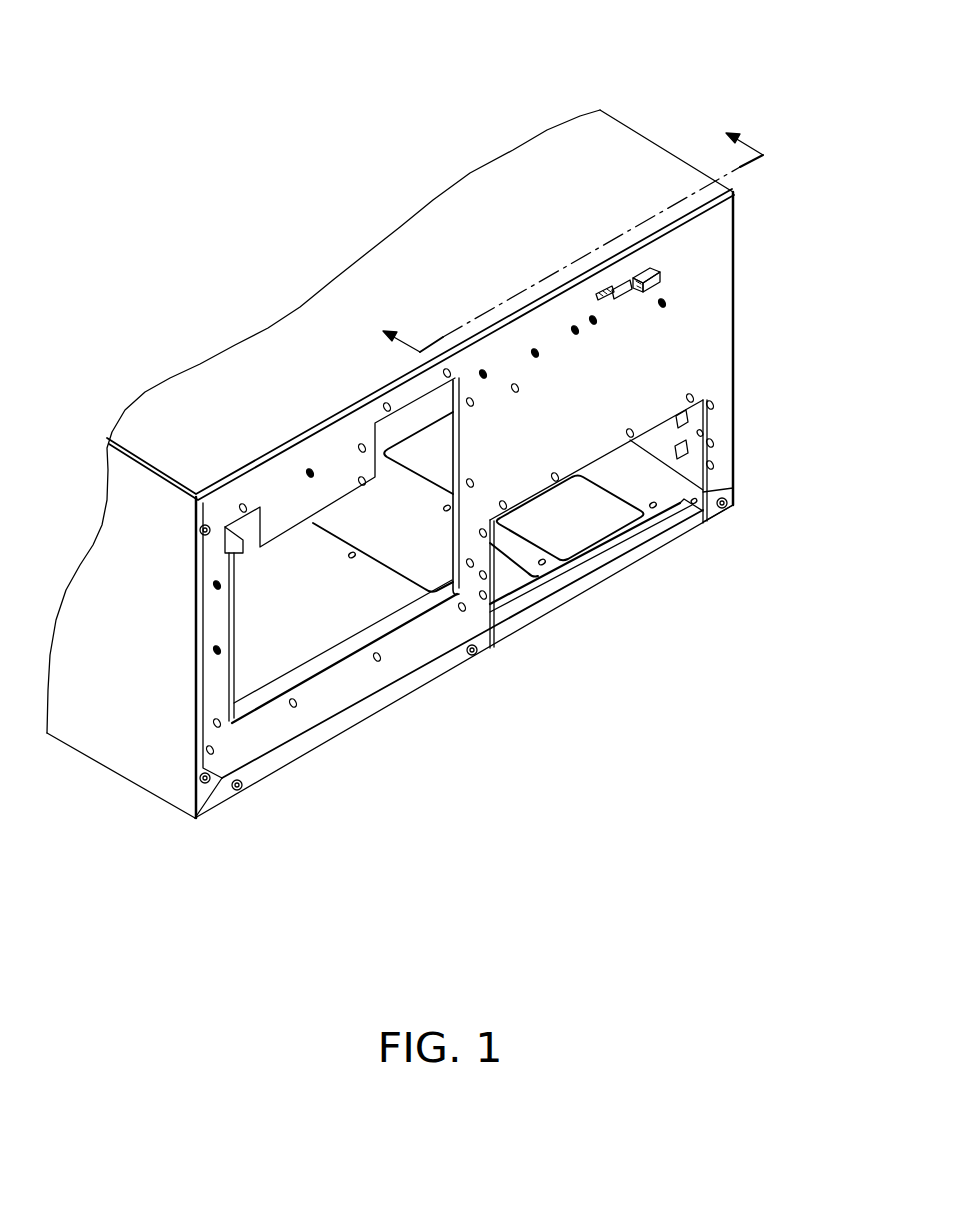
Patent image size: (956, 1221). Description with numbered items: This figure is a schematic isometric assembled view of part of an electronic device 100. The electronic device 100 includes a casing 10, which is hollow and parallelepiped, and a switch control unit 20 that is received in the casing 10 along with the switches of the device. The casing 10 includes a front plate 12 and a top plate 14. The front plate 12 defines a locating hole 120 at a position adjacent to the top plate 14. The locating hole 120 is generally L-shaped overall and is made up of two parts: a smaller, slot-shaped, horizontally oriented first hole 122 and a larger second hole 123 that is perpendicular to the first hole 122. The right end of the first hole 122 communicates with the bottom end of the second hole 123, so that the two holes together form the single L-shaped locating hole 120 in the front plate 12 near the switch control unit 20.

The electronic device 100 is at (250, 157).
The casing 10 is at (93, 727).
The front plate 12 is at (693, 317).
The top plate 14 is at (623, 150).
The switch control unit 20 is at (652, 284).
The locating hole 120 is at (788, 326).
The first hole 122 is at (611, 297).
The second hole 123 is at (619, 288).